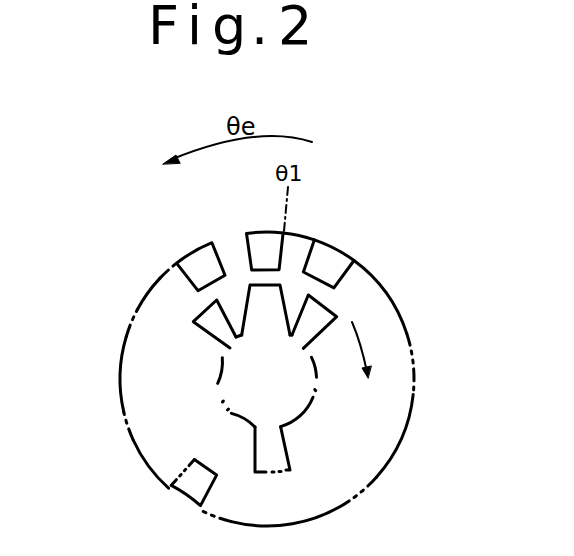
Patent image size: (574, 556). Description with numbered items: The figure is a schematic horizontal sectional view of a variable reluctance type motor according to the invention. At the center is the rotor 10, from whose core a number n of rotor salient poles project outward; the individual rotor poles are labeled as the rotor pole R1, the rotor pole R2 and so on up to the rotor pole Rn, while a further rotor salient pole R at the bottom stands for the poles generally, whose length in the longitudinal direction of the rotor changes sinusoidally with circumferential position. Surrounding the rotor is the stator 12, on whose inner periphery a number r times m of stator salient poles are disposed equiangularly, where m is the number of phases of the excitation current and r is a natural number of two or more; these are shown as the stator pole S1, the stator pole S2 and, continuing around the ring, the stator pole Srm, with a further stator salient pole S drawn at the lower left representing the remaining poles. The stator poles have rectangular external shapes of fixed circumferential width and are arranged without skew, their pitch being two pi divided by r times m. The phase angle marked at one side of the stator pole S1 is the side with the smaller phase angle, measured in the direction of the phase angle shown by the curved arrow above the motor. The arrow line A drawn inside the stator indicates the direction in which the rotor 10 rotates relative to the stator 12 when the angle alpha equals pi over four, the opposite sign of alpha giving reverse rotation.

The rotor 10 is at (214, 369).
The stator 12 is at (287, 368).
The stator pole S1 is at (265, 251).
The stator pole S2 is at (201, 267).
The stator pole Srm is at (337, 263).
The stator salient pole S is at (193, 486).
The rotor pole R1 is at (266, 310).
The rotor pole R2 is at (214, 324).
The rotor pole Rn is at (314, 321).
The rotor salient pole R is at (272, 449).
The arrow line A is at (408, 336).